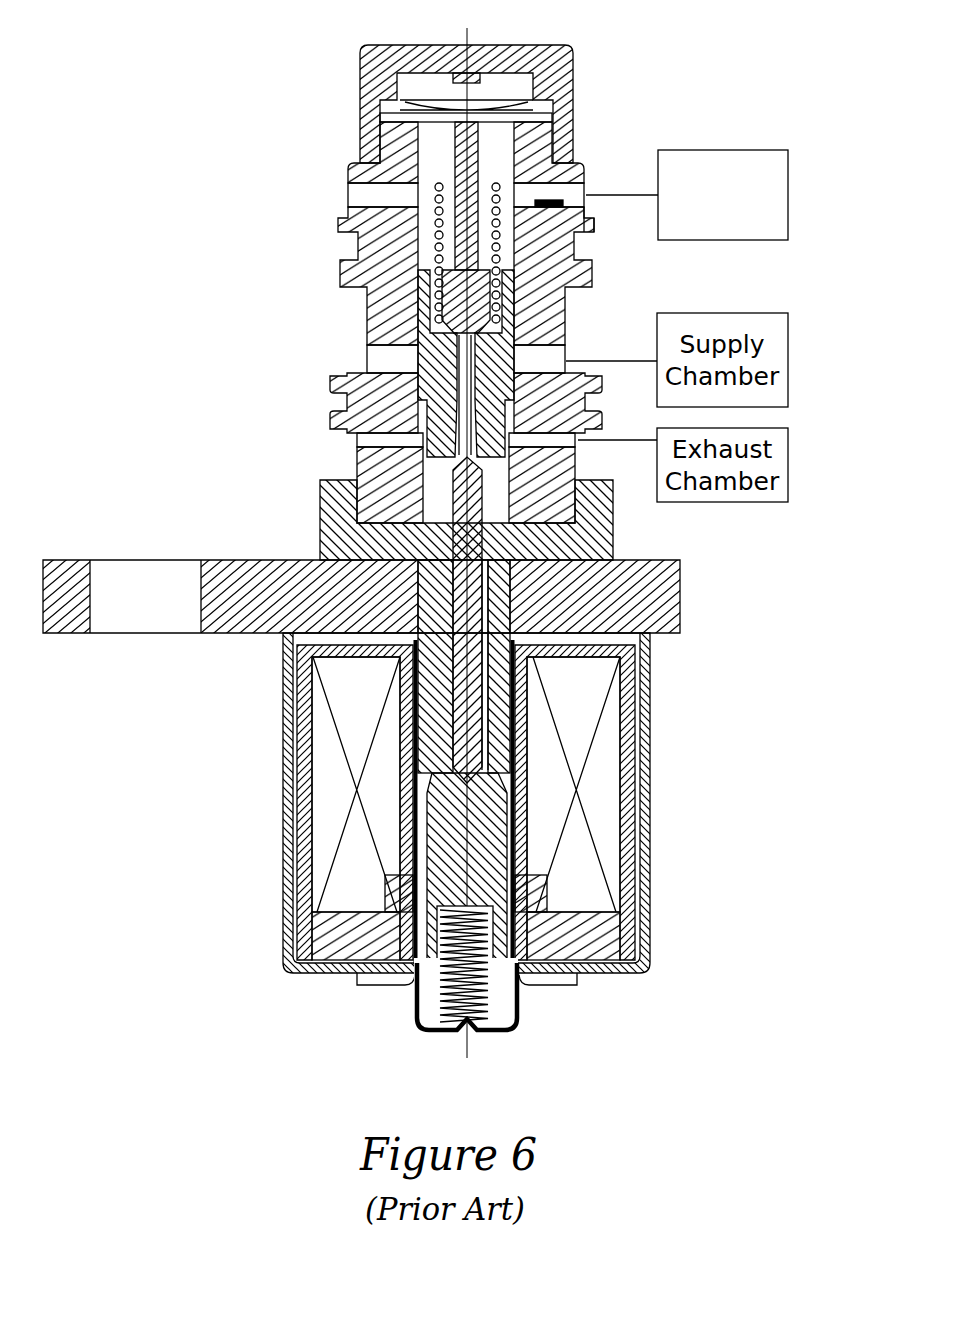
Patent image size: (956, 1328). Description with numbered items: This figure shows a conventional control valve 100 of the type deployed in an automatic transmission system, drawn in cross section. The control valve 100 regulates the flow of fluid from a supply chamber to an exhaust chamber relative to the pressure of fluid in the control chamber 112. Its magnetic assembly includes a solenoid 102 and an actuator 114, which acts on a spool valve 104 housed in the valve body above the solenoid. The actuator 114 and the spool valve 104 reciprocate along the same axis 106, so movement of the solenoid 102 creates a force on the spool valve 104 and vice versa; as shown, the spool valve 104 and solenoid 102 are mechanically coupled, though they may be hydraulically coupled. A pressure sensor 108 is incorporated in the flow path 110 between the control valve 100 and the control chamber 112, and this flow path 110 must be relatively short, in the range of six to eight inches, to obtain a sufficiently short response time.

The control valve 100 is at (158, 926).
The solenoid 102 is at (607, 740).
The spool valve 104 is at (430, 407).
The axis 106 is at (480, 1052).
The pressure sensor 108 is at (587, 196).
The flow path 110 is at (602, 208).
The control chamber 112 is at (788, 195).
The actuator 114 is at (495, 871).